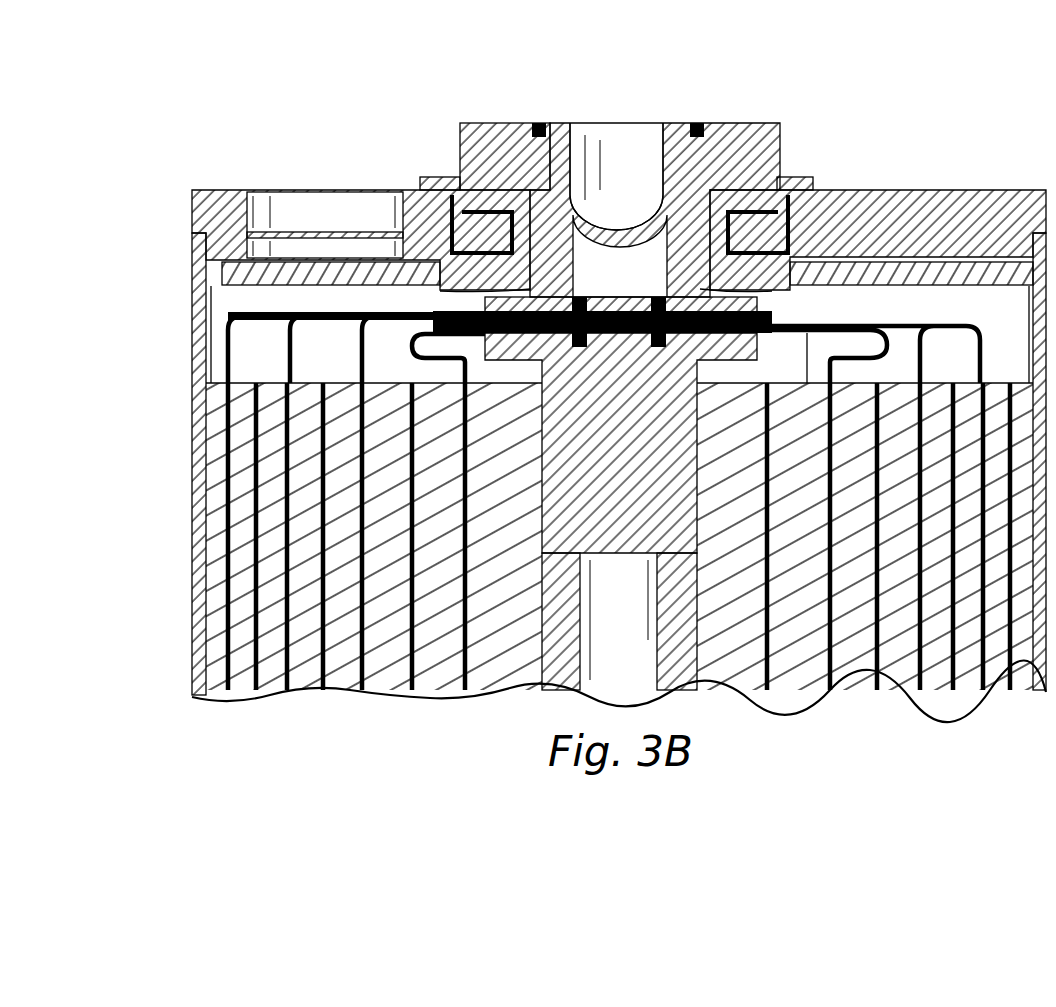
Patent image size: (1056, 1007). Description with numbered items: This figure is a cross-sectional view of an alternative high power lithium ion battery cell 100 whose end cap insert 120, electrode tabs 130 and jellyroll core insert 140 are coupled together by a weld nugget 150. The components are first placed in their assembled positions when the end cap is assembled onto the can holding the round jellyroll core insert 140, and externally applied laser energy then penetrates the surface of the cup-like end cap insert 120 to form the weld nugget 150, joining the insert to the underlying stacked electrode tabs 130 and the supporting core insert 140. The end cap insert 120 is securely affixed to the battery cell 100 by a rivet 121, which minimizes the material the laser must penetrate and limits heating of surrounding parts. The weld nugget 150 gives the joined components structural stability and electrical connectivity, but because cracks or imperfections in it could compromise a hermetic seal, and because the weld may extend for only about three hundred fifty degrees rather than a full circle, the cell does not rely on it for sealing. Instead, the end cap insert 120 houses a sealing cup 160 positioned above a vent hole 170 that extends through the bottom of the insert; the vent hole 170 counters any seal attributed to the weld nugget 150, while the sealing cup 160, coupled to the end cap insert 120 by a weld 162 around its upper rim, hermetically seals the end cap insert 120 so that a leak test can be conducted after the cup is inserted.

The battery cell 100 is at (227, 128).
The end cap insert 120 is at (700, 192).
The rivet 121 is at (475, 122).
The electrode tabs 130 is at (813, 323).
The jellyroll core insert 140 is at (700, 372).
The weld nugget 150 is at (530, 290).
The sealing cup 160 is at (628, 227).
The weld 162 is at (538, 122).
The vent hole 170 is at (620, 297).